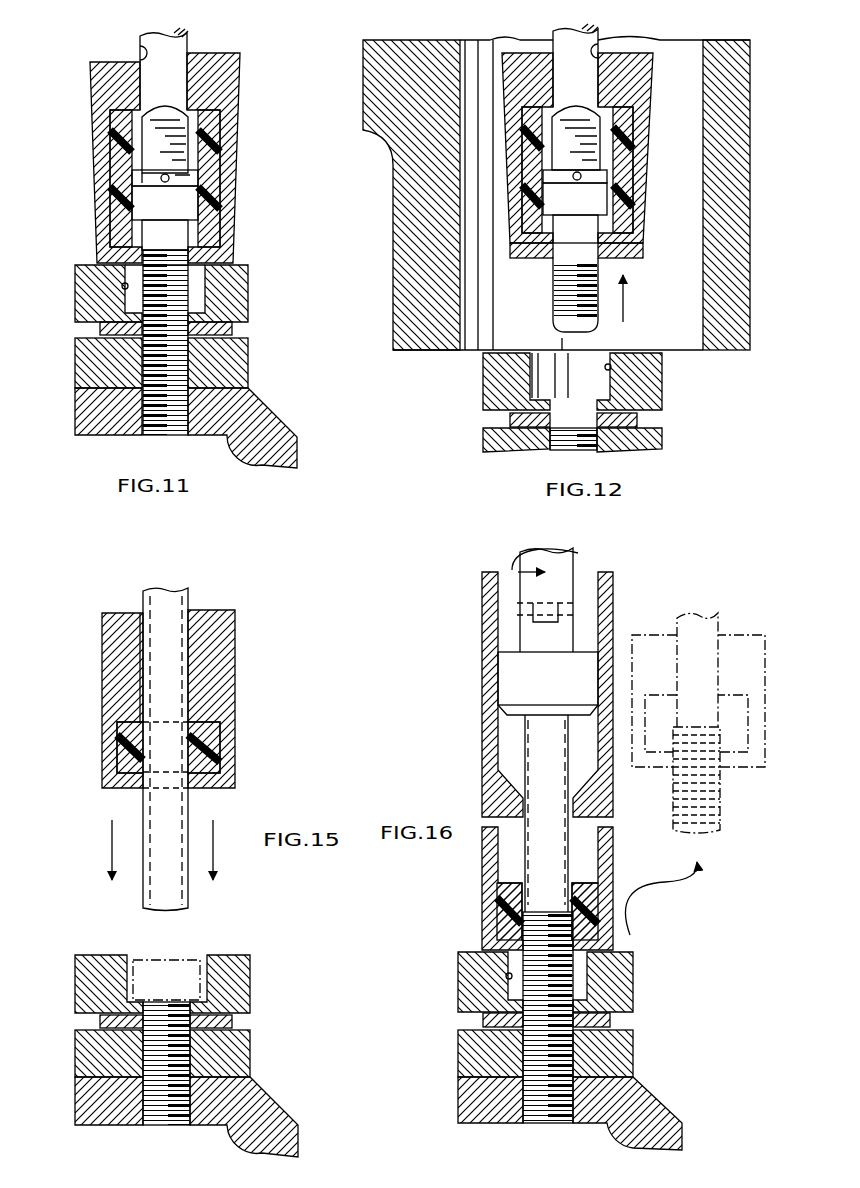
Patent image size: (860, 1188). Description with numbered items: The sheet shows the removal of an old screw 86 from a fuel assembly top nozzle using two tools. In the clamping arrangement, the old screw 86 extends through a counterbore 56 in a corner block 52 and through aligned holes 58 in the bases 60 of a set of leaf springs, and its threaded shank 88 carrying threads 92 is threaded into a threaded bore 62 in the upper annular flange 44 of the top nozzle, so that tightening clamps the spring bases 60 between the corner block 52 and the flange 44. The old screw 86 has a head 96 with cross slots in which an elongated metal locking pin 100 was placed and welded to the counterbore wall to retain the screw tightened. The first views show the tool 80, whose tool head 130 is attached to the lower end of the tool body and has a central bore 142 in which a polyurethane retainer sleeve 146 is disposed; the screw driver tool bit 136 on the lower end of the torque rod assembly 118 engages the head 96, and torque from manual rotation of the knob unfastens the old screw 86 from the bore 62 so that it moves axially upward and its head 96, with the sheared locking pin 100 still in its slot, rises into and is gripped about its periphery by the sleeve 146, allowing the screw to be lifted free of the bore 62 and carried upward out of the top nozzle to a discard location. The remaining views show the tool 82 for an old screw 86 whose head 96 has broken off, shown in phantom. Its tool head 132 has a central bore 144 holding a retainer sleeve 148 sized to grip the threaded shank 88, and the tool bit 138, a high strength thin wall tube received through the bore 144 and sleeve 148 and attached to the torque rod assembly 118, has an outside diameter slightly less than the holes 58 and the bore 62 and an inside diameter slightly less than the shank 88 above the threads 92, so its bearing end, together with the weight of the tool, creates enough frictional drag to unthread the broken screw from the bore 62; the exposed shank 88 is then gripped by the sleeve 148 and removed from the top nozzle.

In FIG. 11, the upper annular flange 44 is at (262, 406).
In FIG. 15, the upper annular flange 44 is at (262, 1100).
In FIG. 16, the upper annular flange 44 is at (660, 1105).
In FIG. 12, the corner block 52 is at (660, 410).
In FIG. 16, the corner block 52 is at (557, 1045).
In FIG. 11, the counterbore 56 is at (122, 287).
In FIG. 12, the counterbore 56 is at (612, 368).
In FIG. 15, the counterbore 56 is at (130, 960).
In FIG. 16, the counterbore 56 is at (505, 985).
In FIG. 11, the holes 58 is at (192, 342).
In FIG. 15, the holes 58 is at (110, 1021).
In FIG. 16, the holes 58 is at (525, 1030).
In FIG. 11, the bases 60 is at (233, 330).
In FIG. 12, the bases 60 is at (508, 420).
In FIG. 15, the bases 60 is at (233, 1022).
In FIG. 16, the bases 60 is at (483, 1020).
In FIG. 11, the threaded bore 62 is at (147, 437).
In FIG. 12, the threaded bore 62 is at (580, 447).
In FIG. 15, the threaded bore 62 is at (192, 1125).
In FIG. 16, the threaded bore 62 is at (540, 1124).
In FIG. 11, the tool 80 is at (140, 158).
In FIG. 12, the tool 80 is at (599, 126).
In FIG. 15, the tool 82 is at (167, 692).
In FIG. 16, the tool 82 is at (607, 730).
In FIG. 11, the old screw 86 is at (204, 336).
In FIG. 12, the old screw 86 is at (604, 325).
In FIG. 15, the old screw 86 is at (167, 1076).
In FIG. 16, the old screw 86 is at (599, 1032).
In FIG. 11, the threaded shank 88 is at (150, 231).
In FIG. 12, the threaded shank 88 is at (592, 228).
In FIG. 15, the threaded shank 88 is at (131, 1076).
In FIG. 16, the threaded shank 88 is at (722, 798).
In FIG. 11, the threads 92 is at (208, 285).
In FIG. 12, the threads 92 is at (622, 260).
In FIG. 11, the head 96 is at (150, 178).
In FIG. 12, the head 96 is at (602, 205).
In FIG. 15, the head 96 is at (196, 964).
In FIG. 11, the locking pin 100 is at (172, 178).
In FIG. 12, the locking pin 100 is at (592, 176).
In FIG. 16, the torque rod assembly 118 is at (575, 628).
In FIG. 11, the tool head 130 is at (91, 142).
In FIG. 12, the tool head 130 is at (655, 110).
In FIG. 15, the tool head 132 is at (236, 685).
In FIG. 16, the tool head 132 is at (482, 680).
In FIG. 11, the tool bit 136 is at (167, 65).
In FIG. 12, the tool bit 136 is at (582, 53).
In FIG. 15, the tool bit 138 is at (190, 800).
In FIG. 16, the tool bit 138 is at (525, 752).
In FIG. 11, the central bore 142 is at (142, 50).
In FIG. 12, the central bore 142 is at (600, 46).
In FIG. 15, the central bore 144 is at (140, 648).
In FIG. 16, the central bore 144 is at (578, 857).
In FIG. 11, the retainer sleeve 146 is at (213, 133).
In FIG. 15, the retainer sleeve 148 is at (216, 762).
In FIG. 16, the retainer sleeve 148 is at (500, 910).